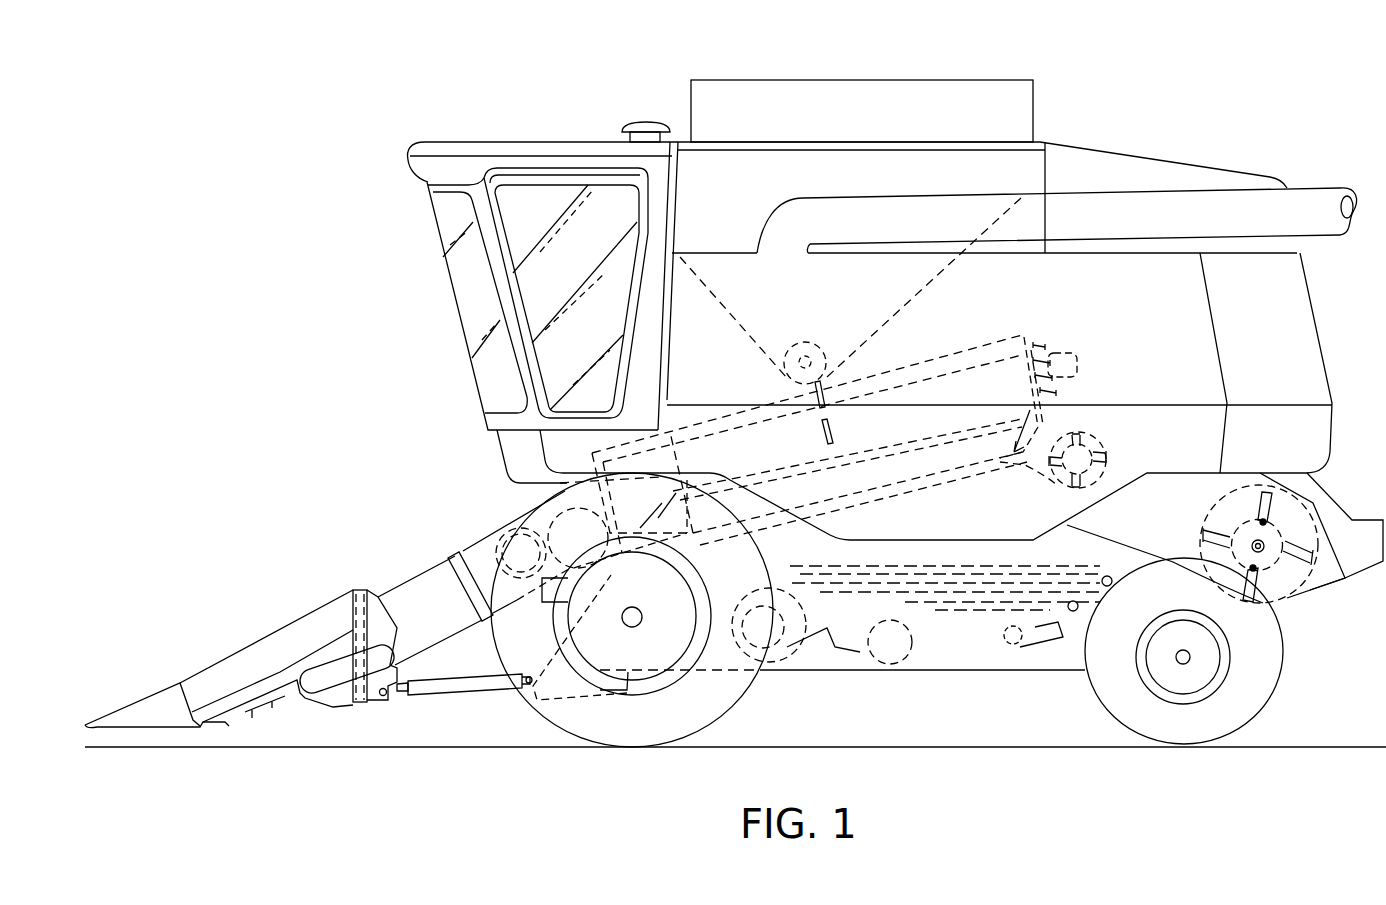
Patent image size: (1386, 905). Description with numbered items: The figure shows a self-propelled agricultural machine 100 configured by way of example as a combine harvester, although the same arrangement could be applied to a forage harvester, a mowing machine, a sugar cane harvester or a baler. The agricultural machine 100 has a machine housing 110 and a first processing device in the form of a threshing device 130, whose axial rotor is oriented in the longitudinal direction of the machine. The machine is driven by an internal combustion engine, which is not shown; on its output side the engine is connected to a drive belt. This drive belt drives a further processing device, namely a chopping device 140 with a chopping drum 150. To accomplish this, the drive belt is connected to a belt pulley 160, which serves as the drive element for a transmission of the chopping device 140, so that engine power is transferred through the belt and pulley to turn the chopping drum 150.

The self-propelled agricultural machine 100 is at (1177, 58).
The machine housing 110 is at (987, 497).
The threshing device 130 is at (893, 423).
The chopping device 140 is at (1300, 572).
The chopping drum 150 is at (1193, 523).
The belt pulley 160 is at (1227, 512).